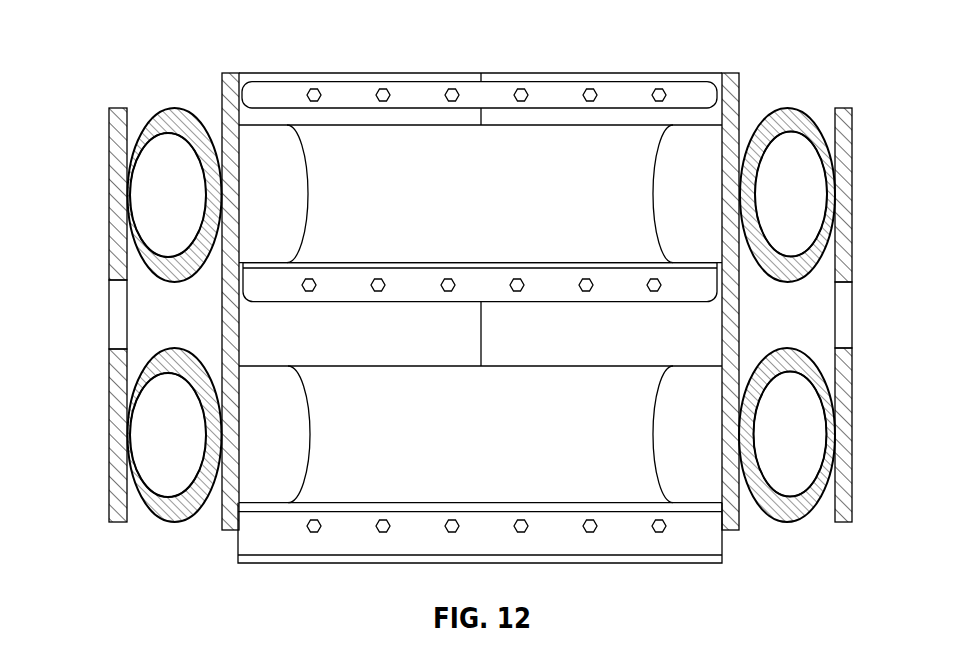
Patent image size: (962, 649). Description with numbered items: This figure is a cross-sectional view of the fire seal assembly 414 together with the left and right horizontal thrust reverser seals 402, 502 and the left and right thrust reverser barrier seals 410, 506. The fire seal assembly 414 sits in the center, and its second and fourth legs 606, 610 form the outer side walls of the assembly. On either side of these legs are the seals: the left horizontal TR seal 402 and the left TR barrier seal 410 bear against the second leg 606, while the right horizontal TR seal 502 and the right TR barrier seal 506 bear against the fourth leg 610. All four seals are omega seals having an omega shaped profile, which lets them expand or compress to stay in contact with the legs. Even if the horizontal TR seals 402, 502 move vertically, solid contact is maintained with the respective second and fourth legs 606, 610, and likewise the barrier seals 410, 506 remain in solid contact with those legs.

The fire seal assembly 414 is at (131, 57).
The fourth leg 610 is at (222, 85).
The second leg 606 is at (740, 87).
The right horizontal TR seal 502 is at (162, 107).
The right TR barrier seal 506 is at (133, 397).
The left horizontal TR seal 402 is at (822, 143).
The left TR barrier seal 410 is at (822, 388).